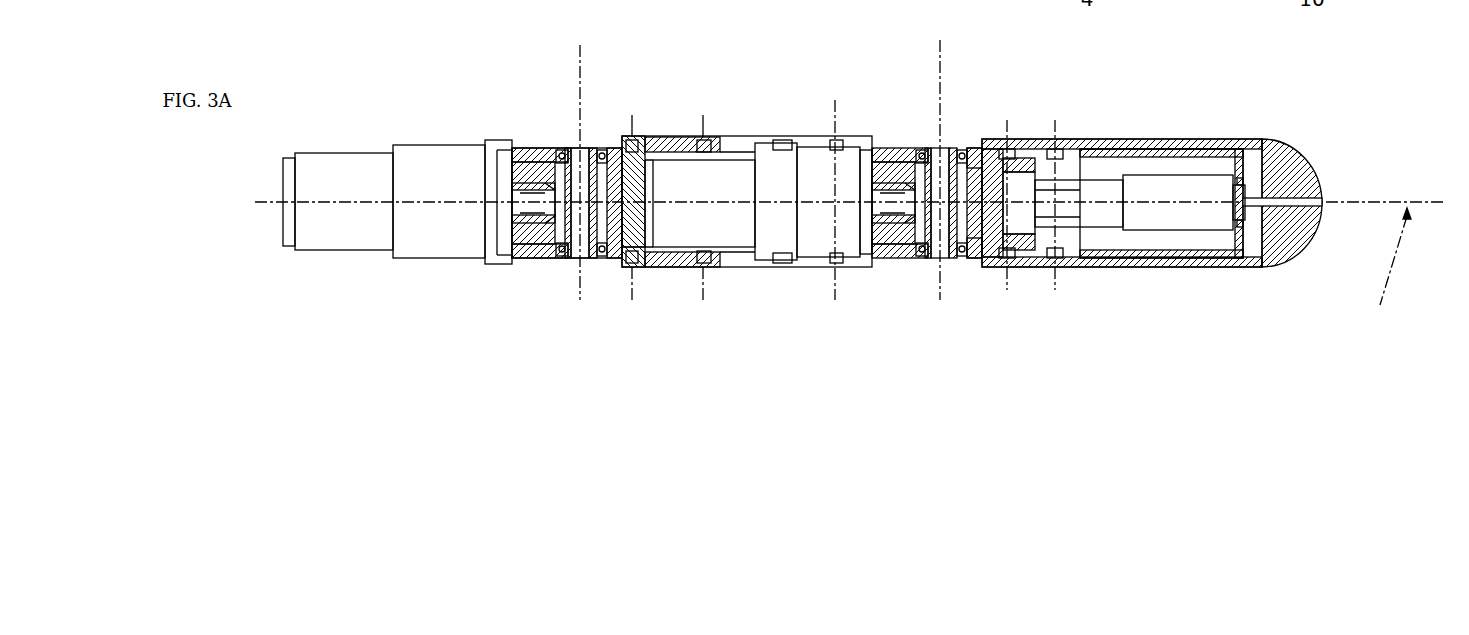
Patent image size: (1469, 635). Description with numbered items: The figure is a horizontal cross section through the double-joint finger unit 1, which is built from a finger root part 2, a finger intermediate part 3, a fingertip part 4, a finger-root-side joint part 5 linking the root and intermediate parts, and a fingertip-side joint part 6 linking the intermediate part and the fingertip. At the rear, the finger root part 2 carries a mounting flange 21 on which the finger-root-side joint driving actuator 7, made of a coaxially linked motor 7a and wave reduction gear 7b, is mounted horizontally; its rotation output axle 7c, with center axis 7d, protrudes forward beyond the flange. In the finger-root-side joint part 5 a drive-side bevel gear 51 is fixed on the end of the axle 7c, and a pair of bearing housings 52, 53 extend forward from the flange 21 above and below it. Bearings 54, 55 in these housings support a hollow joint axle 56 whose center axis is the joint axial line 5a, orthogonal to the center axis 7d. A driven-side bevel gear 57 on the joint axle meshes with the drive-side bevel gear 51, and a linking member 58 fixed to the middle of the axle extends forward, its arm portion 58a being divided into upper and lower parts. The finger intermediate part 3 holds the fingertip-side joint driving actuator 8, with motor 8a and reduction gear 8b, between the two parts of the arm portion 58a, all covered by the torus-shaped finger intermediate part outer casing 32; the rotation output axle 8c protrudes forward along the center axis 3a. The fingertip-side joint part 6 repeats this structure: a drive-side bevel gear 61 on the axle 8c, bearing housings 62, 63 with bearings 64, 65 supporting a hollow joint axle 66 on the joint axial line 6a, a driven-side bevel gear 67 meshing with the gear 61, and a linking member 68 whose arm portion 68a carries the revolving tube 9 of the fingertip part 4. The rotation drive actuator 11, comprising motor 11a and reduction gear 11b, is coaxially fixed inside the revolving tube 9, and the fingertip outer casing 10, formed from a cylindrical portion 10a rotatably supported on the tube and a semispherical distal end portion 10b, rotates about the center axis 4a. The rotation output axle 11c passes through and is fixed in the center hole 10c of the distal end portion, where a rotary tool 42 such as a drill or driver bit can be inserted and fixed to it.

The double-joint finger unit 1 is at (407, 480).
The finger root part 2 is at (272, 395).
The finger intermediate part 3 is at (632, 395).
The center axis of the finger intermediate part 3a is at (722, 137).
The fingertip part 4 is at (1010, 395).
The center axis of the fingertip part 4a is at (1054, 226).
The finger-root-side joint part 5 is at (510, 395).
The joint axial line 5a is at (580, 68).
The fingertip-side joint part 6 is at (878, 395).
The joint axial line 6a is at (938, 130).
The finger-root-side joint driving actuator 7 is at (467, 311).
The motor 7a is at (352, 233).
The reduction gear 7b is at (430, 238).
The rotation output axle 7c is at (510, 228).
The center axis of the rotation output axle 7d is at (330, 204).
The fingertip-side joint driving actuator 8 is at (773, 331).
The motor 8a is at (760, 265).
The reduction gear 8b is at (820, 268).
The rotation output axle 8c is at (866, 268).
The revolving tube 9 is at (1125, 268).
The fingertip outer casing 10 is at (1190, 268).
The cylindrical portion 10a is at (1215, 268).
The semispherical distal end portion 10b is at (1282, 243).
The center hole 10c is at (1300, 200).
The rotation drive actuator 11 is at (1115, 97).
The motor 11a is at (1090, 197).
The reduction gear 11b is at (1168, 192).
The rotation output axle 11c is at (1262, 160).
The mounting flange 21 is at (497, 140).
The finger intermediate part outer casing 32 is at (752, 137).
The rotary tool 42 is at (1387, 275).
The drive-side bevel gear 51 is at (543, 260).
The bearing housing 52 is at (614, 140).
The bearing housing 53 is at (610, 262).
The bearing 54 is at (560, 150).
The bearing 55 is at (588, 262).
The joint axle 56 is at (559, 258).
The driven-side bevel gear 57 is at (620, 140).
The linking member 58 is at (655, 268).
The arm portion 58a is at (690, 268).
The drive-side bevel gear 61 is at (897, 140).
The bearing housing 62 is at (910, 140).
The bearing housing 63 is at (898, 262).
The bearing 64 is at (965, 140).
The bearing 65 is at (954, 262).
The joint axle 66 is at (922, 260).
The driven-side bevel gear 67 is at (983, 140).
The linking member 68 is at (975, 262).
The arm portion 68a is at (1030, 268).